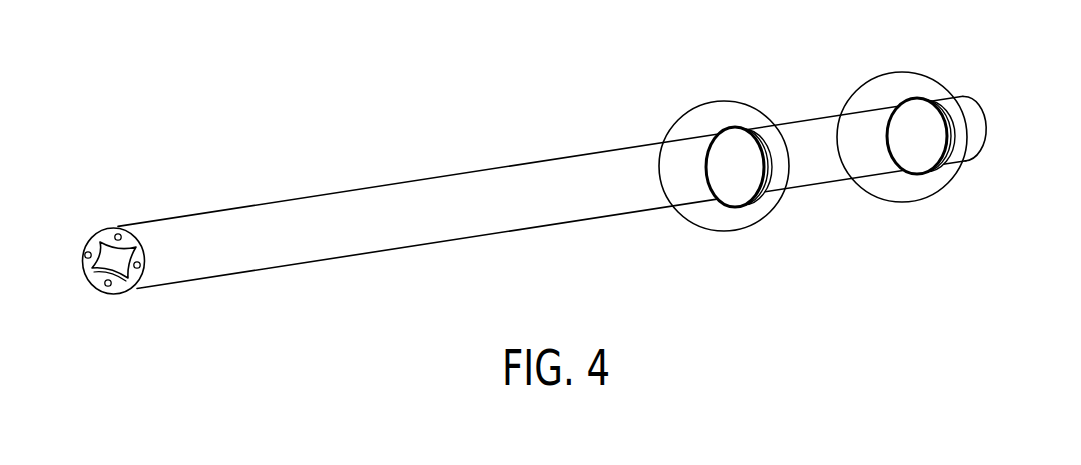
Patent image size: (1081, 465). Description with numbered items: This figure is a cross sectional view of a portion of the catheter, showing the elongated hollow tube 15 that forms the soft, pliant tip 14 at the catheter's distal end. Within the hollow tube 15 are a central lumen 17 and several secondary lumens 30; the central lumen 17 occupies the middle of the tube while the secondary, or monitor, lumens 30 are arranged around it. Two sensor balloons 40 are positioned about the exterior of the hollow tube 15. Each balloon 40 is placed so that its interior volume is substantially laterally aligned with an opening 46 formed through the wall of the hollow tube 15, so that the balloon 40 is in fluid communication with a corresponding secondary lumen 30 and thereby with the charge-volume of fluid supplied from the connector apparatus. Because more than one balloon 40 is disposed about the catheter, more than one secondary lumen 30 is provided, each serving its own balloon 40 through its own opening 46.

The soft tip 14 is at (983, 125).
The hollow tube 15 is at (403, 250).
The central lumen 17 is at (103, 231).
The secondary lumen 30 is at (120, 233).
The balloon 40 is at (710, 102).
The opening 46 is at (742, 202).